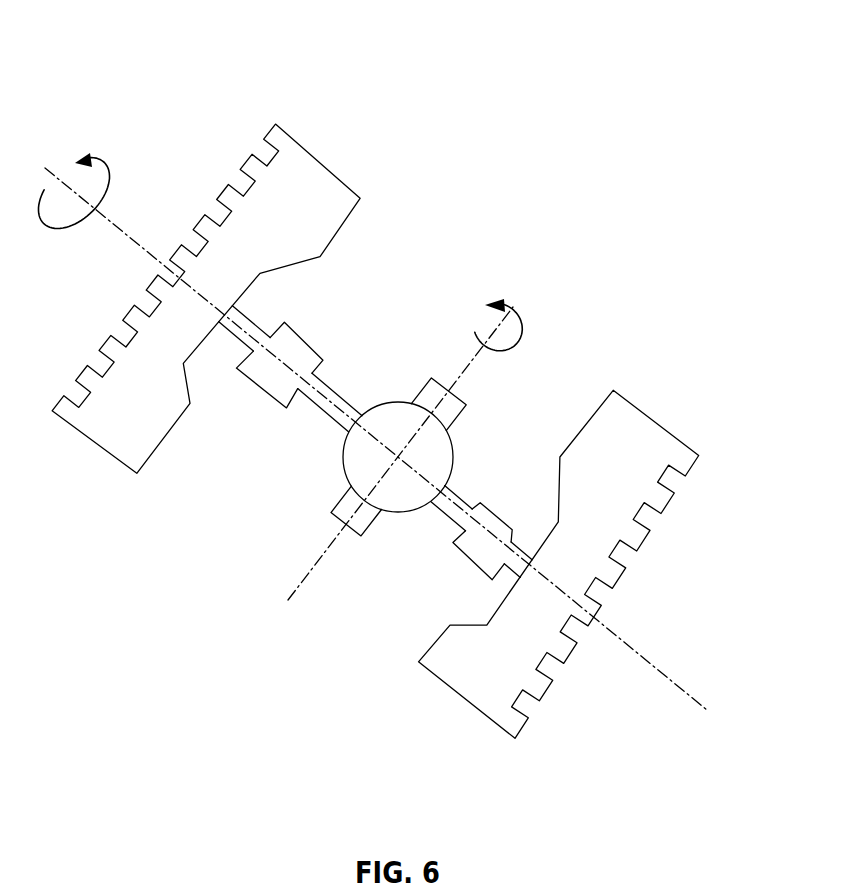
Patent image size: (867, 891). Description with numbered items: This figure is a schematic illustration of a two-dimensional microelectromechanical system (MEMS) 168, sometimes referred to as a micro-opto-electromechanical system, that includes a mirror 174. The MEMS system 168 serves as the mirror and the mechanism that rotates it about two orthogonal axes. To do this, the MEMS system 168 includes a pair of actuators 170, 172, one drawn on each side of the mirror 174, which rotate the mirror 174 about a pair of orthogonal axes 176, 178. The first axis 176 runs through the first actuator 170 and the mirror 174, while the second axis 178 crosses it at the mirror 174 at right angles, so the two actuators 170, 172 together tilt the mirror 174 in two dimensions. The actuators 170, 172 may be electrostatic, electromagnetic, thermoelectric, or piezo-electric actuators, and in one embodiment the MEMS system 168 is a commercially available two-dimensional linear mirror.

The microelectromechanical system (MEMS) 168 is at (505, 92).
The actuator 170 is at (320, 157).
The actuator 172 is at (657, 417).
The mirror 174 is at (398, 513).
The axis 176 is at (138, 247).
The axis 178 is at (300, 604).